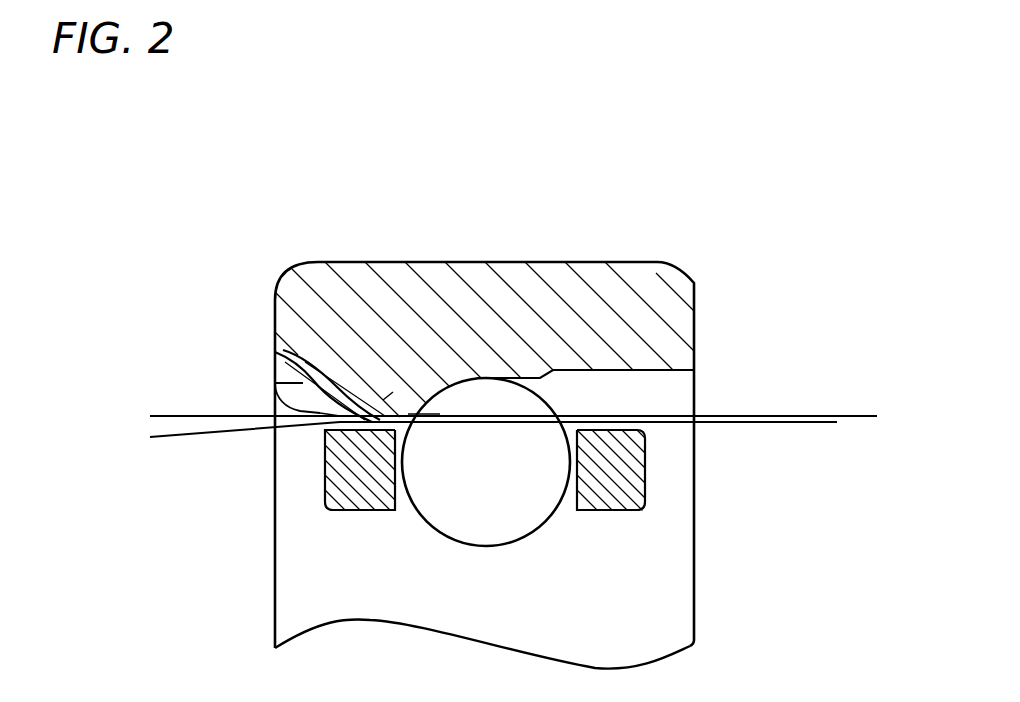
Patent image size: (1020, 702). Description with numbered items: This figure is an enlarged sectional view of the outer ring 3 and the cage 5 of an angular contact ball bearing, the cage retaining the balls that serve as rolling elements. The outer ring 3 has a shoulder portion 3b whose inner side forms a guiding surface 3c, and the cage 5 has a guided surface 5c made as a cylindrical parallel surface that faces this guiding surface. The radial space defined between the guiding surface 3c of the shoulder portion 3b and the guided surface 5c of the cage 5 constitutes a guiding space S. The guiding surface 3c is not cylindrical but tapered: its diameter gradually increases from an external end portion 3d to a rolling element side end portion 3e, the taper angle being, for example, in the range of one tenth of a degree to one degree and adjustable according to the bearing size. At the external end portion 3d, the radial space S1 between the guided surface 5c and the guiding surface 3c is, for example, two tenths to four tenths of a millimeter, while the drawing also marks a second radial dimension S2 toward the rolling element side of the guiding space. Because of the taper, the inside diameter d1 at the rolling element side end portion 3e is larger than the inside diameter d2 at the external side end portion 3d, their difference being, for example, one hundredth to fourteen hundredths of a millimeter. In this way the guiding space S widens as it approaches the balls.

The outer ring 3 is at (313, 312).
The shoulder portion 3b is at (383, 407).
The guiding surface 3c is at (283, 350).
The external end portion 3d is at (328, 422).
The rolling element side end portion 3e is at (408, 414).
The cage 5 is at (607, 459).
The guided surface 5c is at (327, 430).
The guiding space S is at (275, 352).
The radial space S1 is at (304, 450).
The gap dimension S2 is at (758, 445).
The inside diameter of the rolling element side end portion d1 is at (862, 416).
The inside diameter of the external side end portion d2 is at (812, 422).